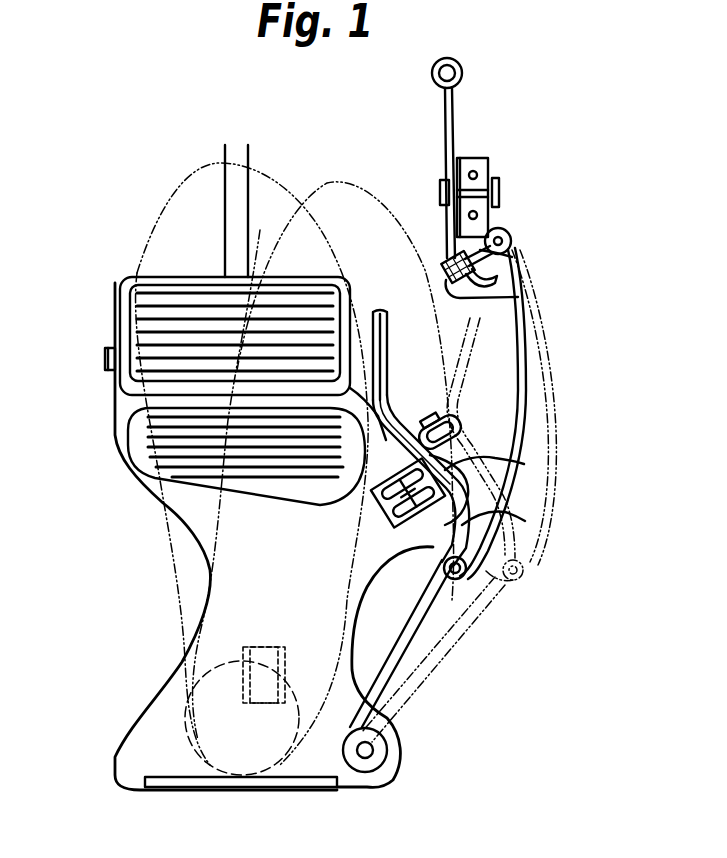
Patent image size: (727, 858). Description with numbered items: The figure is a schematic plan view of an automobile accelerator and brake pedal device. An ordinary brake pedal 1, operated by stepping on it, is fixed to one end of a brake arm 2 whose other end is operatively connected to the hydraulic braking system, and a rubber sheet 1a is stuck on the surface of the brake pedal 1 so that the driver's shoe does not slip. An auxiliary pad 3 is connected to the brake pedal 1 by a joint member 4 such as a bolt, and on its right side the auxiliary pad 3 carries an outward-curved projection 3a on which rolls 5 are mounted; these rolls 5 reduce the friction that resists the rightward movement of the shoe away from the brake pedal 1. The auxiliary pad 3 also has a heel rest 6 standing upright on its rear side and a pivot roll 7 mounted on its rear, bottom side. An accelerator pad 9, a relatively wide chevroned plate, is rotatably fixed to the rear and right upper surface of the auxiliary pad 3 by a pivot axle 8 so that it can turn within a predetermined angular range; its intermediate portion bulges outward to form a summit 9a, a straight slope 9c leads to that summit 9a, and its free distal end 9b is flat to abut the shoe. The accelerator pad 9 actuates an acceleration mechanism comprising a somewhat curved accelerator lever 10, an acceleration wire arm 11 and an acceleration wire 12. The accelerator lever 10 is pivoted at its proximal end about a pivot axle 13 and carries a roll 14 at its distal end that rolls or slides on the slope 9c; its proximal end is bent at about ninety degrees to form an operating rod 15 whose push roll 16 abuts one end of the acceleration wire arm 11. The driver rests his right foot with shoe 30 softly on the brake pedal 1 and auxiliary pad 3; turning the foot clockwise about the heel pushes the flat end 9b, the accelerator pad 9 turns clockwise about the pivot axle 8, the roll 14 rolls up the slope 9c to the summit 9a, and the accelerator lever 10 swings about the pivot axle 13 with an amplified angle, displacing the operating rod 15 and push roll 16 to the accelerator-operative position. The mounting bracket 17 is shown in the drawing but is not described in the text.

The brake pedal 1 is at (125, 280).
The rubber sheet 1a is at (152, 326).
The brake arm 2 is at (228, 160).
The auxiliary pad 3 is at (152, 490).
The outward-curved projection 3a is at (460, 465).
The joint member 4 is at (106, 365).
The rolls 5 is at (417, 442).
The heel rest 6 is at (180, 790).
The pivot roll 7 is at (245, 680).
The pivot axle 8 is at (375, 770).
The accelerator pad 9 is at (410, 657).
The summit 9a is at (470, 522).
The free distal end 9b is at (381, 312).
The slope 9c is at (426, 600).
The accelerator lever 10 is at (528, 372).
The acceleration wire arm 11 is at (447, 104).
The acceleration wire 12 is at (462, 74).
The pivot axle 13 is at (506, 232).
The roll 14 is at (458, 580).
The operating rod 15 is at (482, 258).
The push roll 16 is at (472, 302).
The mounting bracket 17 is at (442, 192).
The shoe 30 is at (160, 215).